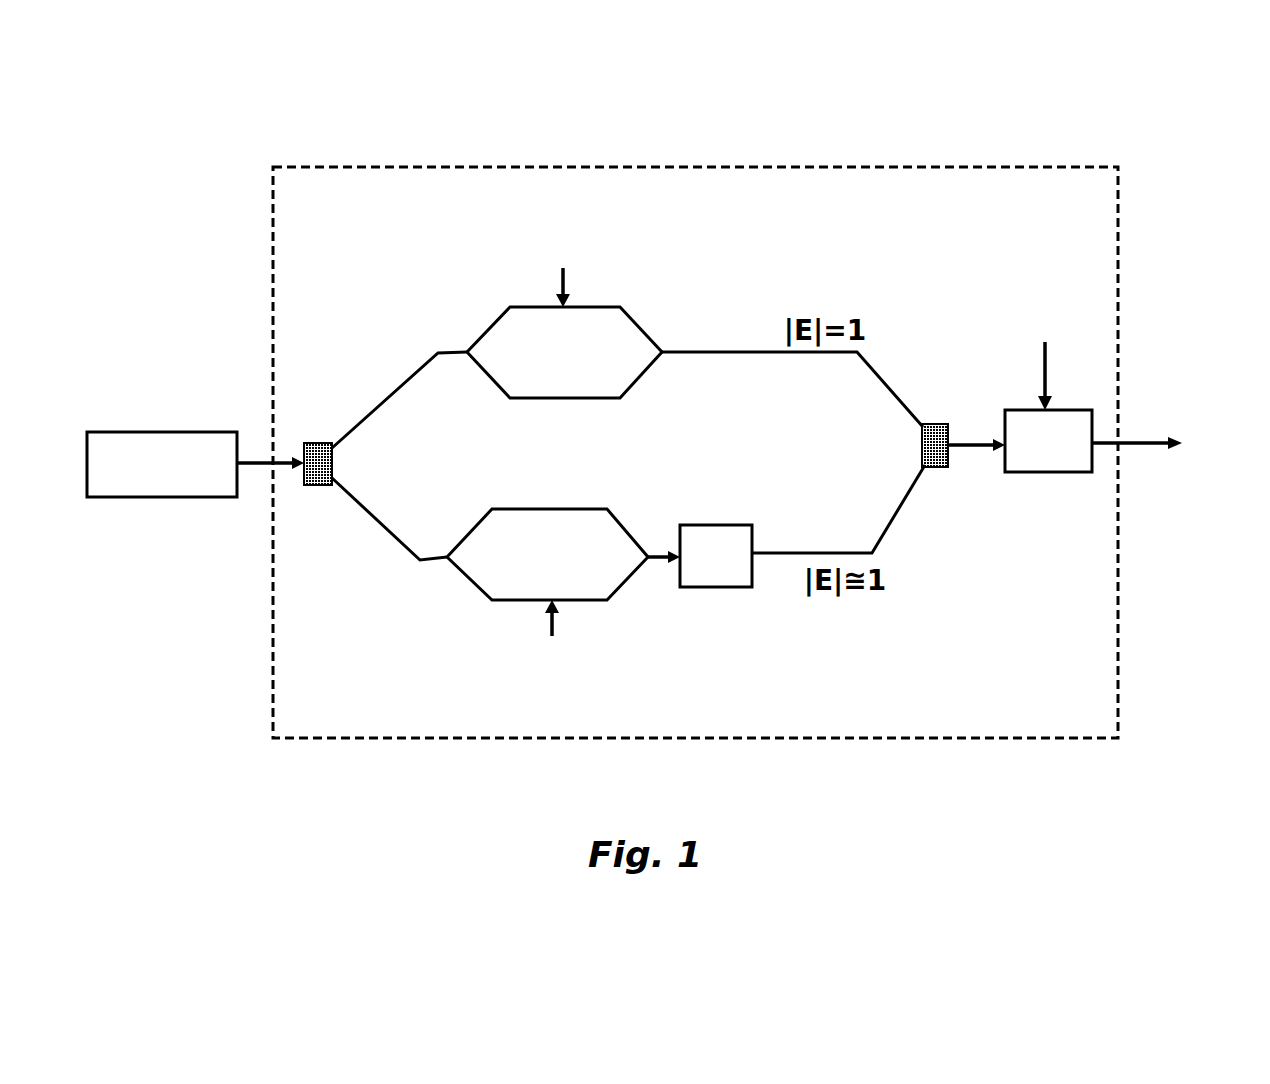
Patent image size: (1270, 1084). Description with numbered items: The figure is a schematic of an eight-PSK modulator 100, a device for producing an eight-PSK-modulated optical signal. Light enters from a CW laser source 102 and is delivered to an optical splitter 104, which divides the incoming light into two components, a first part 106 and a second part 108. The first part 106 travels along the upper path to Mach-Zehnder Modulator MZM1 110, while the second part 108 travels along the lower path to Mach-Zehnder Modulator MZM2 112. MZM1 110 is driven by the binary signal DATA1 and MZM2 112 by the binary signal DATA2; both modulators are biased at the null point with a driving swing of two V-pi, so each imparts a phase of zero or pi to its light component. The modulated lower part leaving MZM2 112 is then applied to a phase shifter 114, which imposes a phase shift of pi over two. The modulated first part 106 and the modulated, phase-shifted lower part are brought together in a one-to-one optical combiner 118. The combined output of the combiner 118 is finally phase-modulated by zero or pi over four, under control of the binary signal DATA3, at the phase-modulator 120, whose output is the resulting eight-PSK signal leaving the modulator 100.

The 8-PSK modulator 100 is at (768, 95).
The CW laser source 102 is at (140, 503).
The optical splitter 104 is at (312, 440).
The first part 106 is at (402, 385).
The second part 108 is at (378, 525).
The Mach-Zehnder Modulator MZM1 110 is at (630, 316).
The Mach-Zehnder Modulator MZM2 112 is at (613, 515).
The phase shifter 114 is at (733, 588).
The 1:1 optical combiner 118 is at (935, 470).
The phase-modulator 120 is at (1070, 410).